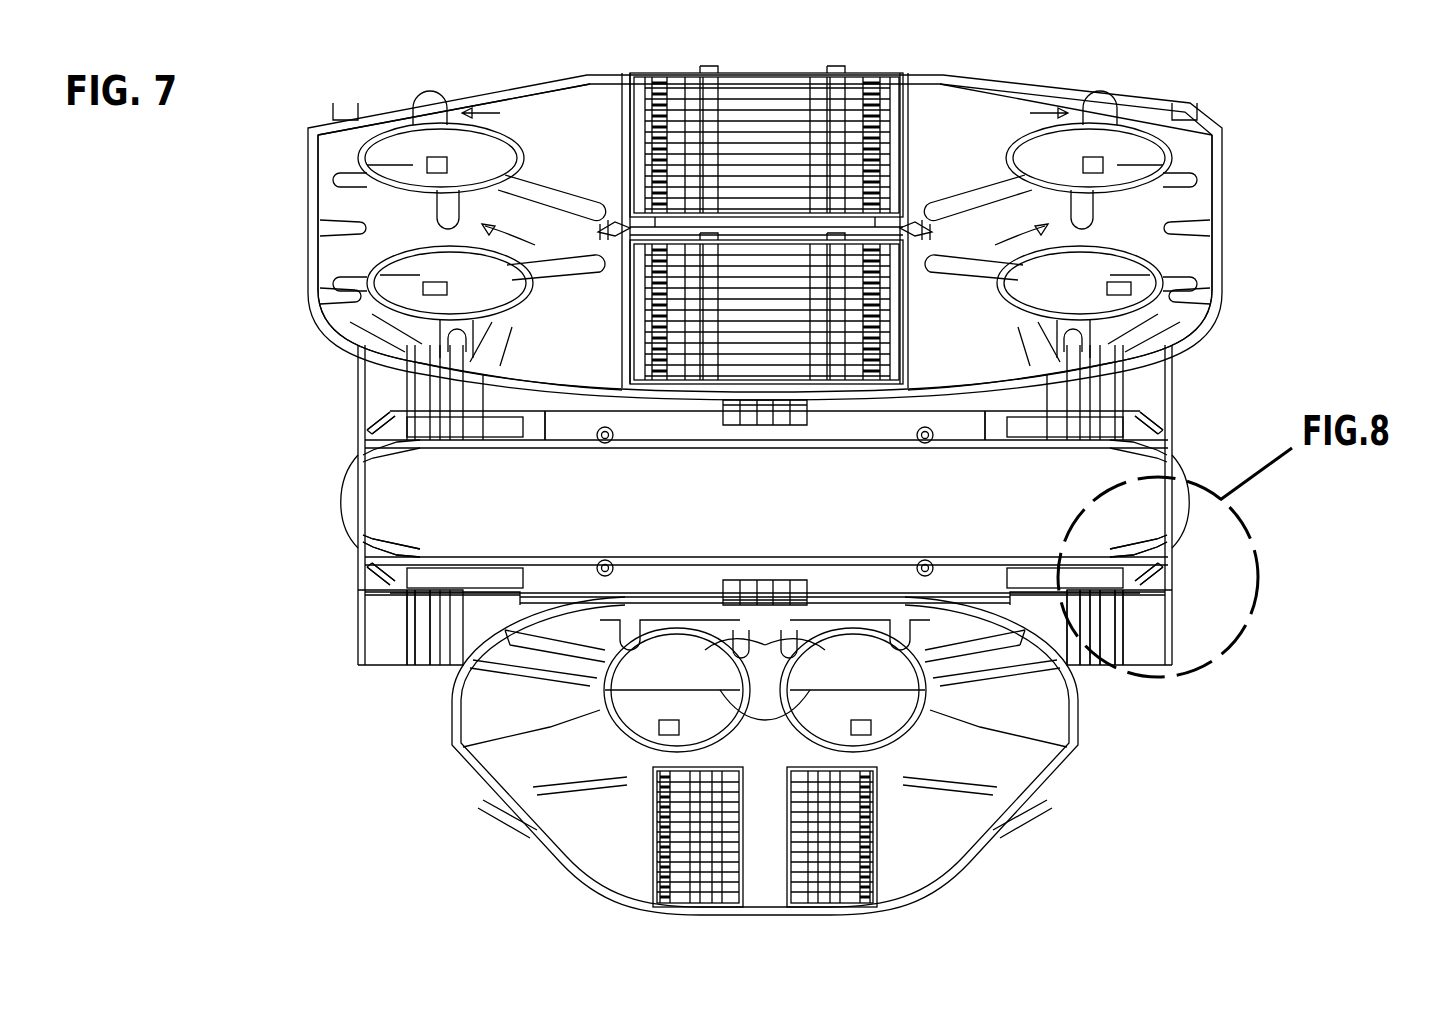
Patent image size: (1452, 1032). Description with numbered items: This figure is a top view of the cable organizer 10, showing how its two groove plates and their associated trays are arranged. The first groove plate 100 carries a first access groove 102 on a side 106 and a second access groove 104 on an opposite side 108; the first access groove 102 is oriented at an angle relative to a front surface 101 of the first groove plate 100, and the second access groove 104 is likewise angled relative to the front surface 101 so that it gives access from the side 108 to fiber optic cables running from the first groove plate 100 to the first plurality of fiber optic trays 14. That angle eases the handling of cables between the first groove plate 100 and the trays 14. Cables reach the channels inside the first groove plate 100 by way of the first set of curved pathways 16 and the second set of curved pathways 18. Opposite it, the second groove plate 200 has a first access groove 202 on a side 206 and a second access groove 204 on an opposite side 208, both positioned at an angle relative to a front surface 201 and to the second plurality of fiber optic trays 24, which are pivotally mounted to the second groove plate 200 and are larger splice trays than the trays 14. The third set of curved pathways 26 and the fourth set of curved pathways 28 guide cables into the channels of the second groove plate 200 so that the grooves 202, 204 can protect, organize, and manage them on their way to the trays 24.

The cable organizer 10 is at (1308, 98).
The first plurality of fiber optic trays 14 is at (492, 793).
The first set of curved pathways 16 is at (1123, 632).
The second set of curved pathways 18 is at (418, 618).
The second plurality of fiber optic trays 24 is at (320, 183).
The third set of curved pathways 26 is at (407, 372).
The fourth set of curved pathways 28 is at (1122, 378).
The first groove plate 100 is at (485, 597).
The front surface 101 is at (1087, 595).
The first access groove 102 is at (1158, 582).
The second access groove 104 is at (368, 577).
The side 106 is at (1173, 558).
The opposite side 108 is at (358, 563).
The second groove plate 200 is at (1063, 412).
The front surface 201 is at (418, 413).
The first access groove 202 is at (375, 425).
The second access groove 204 is at (1157, 425).
The side 206 is at (360, 442).
The opposite side 208 is at (1173, 445).